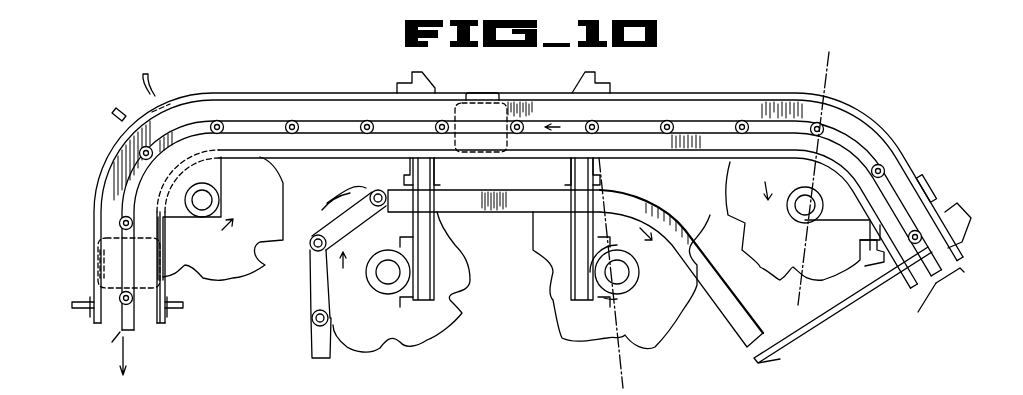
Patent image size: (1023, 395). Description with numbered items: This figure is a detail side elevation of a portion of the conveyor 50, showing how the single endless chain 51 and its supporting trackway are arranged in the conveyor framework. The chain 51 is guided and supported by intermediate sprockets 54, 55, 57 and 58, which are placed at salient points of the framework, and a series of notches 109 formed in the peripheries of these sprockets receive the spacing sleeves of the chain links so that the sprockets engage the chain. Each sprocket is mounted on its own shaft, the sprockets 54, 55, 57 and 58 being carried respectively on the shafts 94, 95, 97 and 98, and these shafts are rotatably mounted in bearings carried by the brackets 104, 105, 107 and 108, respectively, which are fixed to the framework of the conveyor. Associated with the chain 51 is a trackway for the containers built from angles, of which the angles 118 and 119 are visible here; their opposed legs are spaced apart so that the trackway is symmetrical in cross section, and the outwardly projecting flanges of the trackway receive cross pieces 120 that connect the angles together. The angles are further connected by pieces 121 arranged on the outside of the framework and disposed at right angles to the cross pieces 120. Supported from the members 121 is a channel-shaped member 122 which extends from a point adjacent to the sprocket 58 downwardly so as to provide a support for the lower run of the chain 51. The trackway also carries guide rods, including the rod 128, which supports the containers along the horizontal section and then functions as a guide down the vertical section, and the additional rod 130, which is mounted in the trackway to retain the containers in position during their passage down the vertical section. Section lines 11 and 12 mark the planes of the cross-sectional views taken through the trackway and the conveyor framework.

The section line 11- 11 is at (839, 65).
The section line 12- 12 is at (616, 179).
The conveyor 50 is at (960, 276).
The endless chain 51 is at (311, 352).
The intermediate sprocket 54 is at (226, 283).
The intermediate sprocket 55 is at (765, 277).
The intermediate sprocket 57 is at (590, 340).
The intermediate sprocket 58 is at (424, 340).
The shaft 94 is at (205, 201).
The shaft 95 is at (795, 218).
The shaft 97 is at (640, 272).
The shaft 98 is at (384, 290).
The bracket 104 is at (221, 172).
The bracket 105 is at (820, 224).
The bracket 107 is at (617, 298).
The bracket 108 is at (380, 256).
The notches 109 is at (265, 244).
The angle 118 is at (320, 95).
The angle 119 is at (321, 160).
The cross pieces 120 is at (409, 84).
The connecting pieces 121 is at (436, 182).
The channel-shaped member 122 is at (540, 212).
The rod 128 is at (162, 239).
The rod 130 is at (146, 80).